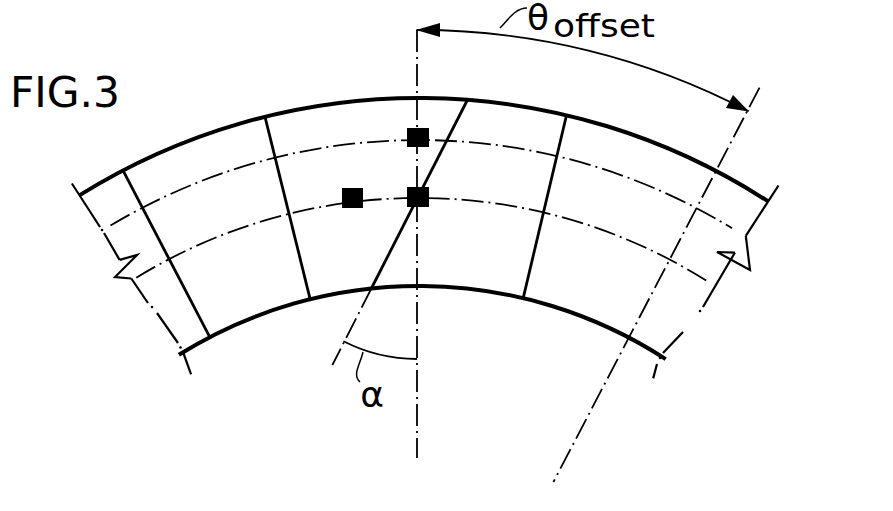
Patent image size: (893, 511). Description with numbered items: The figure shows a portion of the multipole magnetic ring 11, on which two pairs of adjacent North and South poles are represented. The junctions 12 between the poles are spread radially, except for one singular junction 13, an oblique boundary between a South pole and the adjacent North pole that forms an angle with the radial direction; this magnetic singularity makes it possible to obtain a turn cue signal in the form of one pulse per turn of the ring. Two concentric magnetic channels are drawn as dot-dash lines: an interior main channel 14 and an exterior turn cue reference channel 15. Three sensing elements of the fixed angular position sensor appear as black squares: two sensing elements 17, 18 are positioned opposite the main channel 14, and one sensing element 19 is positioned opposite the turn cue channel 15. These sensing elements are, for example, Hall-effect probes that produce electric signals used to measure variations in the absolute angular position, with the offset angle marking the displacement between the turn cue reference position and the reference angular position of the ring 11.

The multipole magnetic ring 11 is at (253, 118).
The junctions 12 is at (127, 193).
The singular junction 13 is at (462, 123).
The interior main channel 14 is at (690, 278).
The exterior reference channel 15 is at (733, 226).
The sensing element 17 is at (350, 186).
The sensing element 18 is at (430, 195).
The sensing element 19 is at (410, 128).